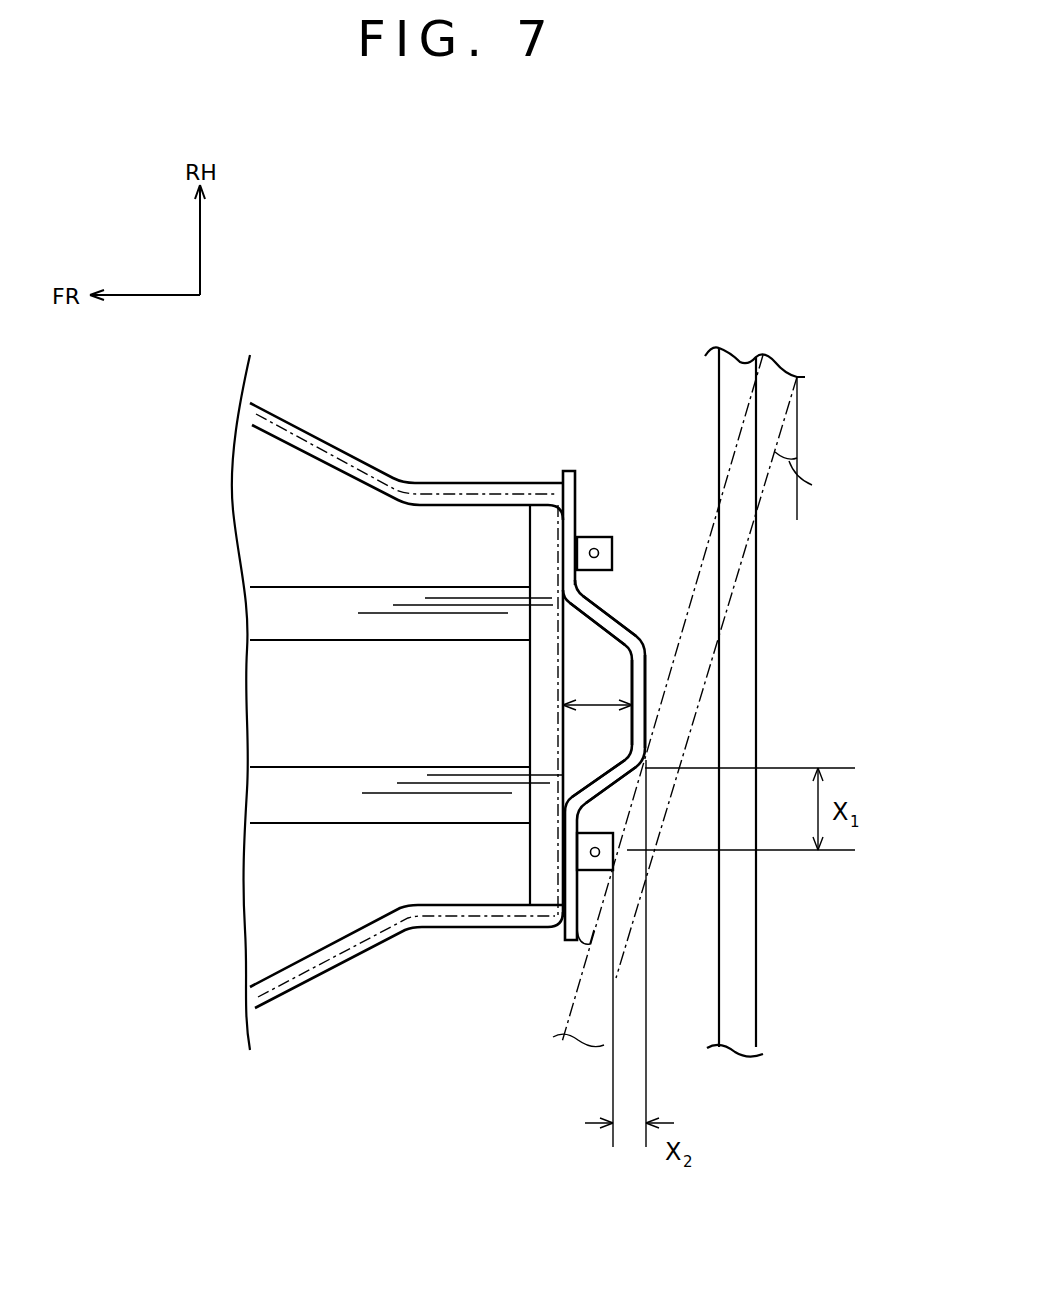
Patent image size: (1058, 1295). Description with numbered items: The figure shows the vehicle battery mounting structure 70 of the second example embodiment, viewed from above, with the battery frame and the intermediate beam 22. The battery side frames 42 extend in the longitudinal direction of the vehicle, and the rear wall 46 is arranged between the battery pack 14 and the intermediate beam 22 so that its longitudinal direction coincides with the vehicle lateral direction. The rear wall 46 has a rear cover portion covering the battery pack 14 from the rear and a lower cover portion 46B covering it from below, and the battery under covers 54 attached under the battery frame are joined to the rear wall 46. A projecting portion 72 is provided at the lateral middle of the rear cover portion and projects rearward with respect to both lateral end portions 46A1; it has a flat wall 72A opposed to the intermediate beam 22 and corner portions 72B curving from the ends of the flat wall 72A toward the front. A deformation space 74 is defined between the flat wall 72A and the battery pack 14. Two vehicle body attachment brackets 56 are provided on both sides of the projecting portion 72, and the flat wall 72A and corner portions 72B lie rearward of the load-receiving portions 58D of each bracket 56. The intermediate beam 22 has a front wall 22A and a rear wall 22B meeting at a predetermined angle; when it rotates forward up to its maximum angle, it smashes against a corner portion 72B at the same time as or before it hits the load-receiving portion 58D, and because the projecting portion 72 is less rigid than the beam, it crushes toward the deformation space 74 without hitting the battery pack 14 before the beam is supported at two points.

The battery pack 14 is at (374, 468).
The intermediate beam 22 is at (573, 1003).
The front wall 22A is at (718, 962).
The rear wall 22B is at (757, 955).
The battery side frame 42 is at (343, 452).
The rear wall 46 is at (530, 700).
The vehicle lateral direction end portion 46A1 is at (577, 487).
The lower cover portion 46B is at (545, 737).
The battery under cover 54 is at (332, 642).
The vehicle body attachment bracket 56 is at (590, 537).
The load-receiving portion 58D is at (613, 548).
The vehicle battery mounting structure 70 is at (535, 350).
The projecting portion 72 is at (647, 659).
The flat wall 72A is at (648, 697).
The corner portion 72B is at (627, 620).
The deformation space 74 is at (613, 681).